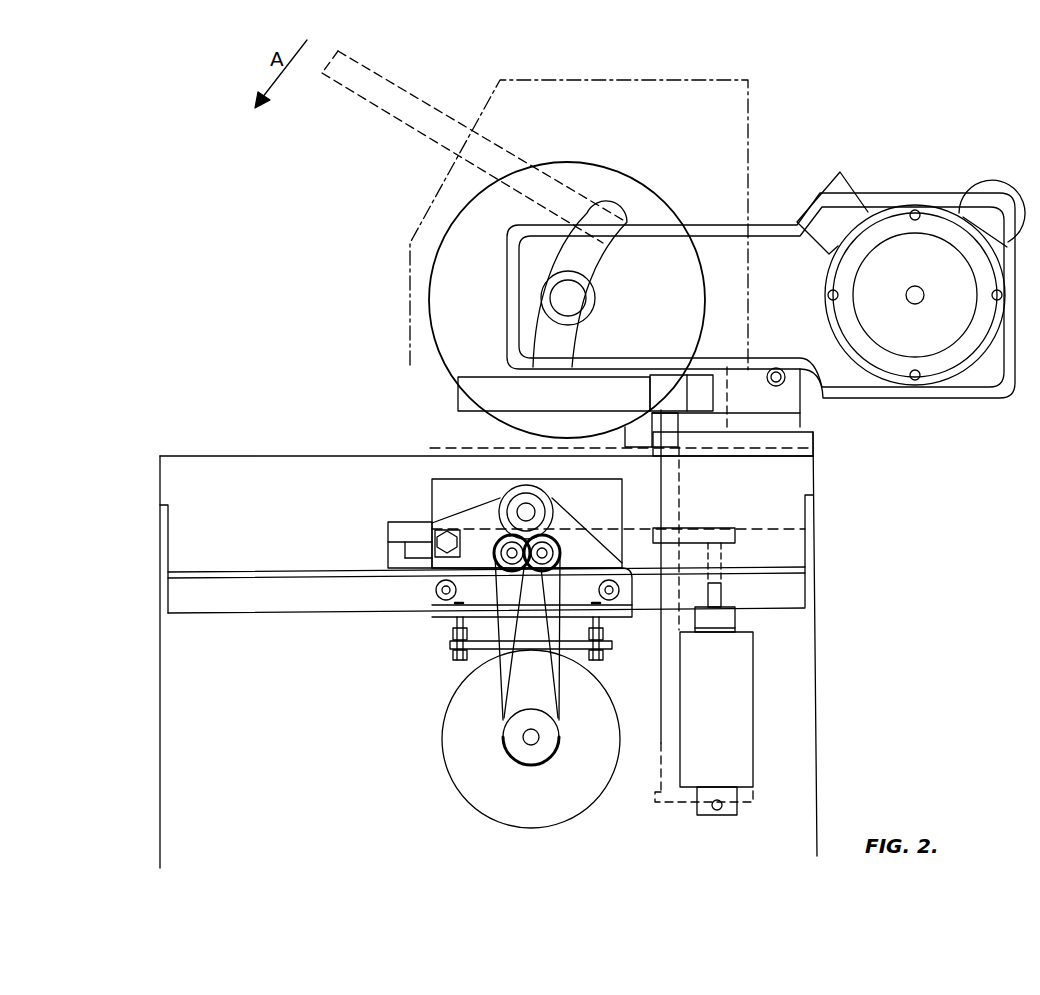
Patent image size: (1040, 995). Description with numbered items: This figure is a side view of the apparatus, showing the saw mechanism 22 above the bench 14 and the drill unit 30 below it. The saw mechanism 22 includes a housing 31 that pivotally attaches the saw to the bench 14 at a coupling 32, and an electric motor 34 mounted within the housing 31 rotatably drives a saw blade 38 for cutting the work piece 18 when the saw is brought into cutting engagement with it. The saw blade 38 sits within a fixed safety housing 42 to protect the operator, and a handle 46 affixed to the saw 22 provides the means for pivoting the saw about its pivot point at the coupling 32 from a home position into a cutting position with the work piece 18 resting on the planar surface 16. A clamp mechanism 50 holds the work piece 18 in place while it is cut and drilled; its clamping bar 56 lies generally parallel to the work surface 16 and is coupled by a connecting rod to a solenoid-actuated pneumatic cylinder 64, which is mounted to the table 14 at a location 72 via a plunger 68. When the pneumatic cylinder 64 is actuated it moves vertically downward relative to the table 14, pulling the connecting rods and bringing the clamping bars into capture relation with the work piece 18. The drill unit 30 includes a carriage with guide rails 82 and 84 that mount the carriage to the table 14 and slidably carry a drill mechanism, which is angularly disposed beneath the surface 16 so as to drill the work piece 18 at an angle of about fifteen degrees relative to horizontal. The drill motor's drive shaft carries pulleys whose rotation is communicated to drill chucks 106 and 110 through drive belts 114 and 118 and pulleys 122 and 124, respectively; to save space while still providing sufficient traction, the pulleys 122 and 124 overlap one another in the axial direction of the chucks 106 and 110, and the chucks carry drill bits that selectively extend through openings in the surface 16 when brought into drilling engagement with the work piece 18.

The bench 14 is at (222, 430).
The planar surface 16 is at (307, 456).
The work piece 18 is at (500, 433).
The saw mechanism 22 is at (812, 126).
The drill unit 30 is at (394, 679).
The housing 31 is at (762, 224).
The coupling 32 is at (785, 386).
The electric motor 34 is at (930, 193).
The saw blade 38 is at (641, 183).
The safety housing 42 is at (603, 80).
The handle 46 is at (360, 64).
The clamp mechanism 50 is at (420, 388).
The clamping bar 56 is at (458, 401).
The pneumatic cylinder 64 is at (753, 717).
The plunger 68 is at (723, 593).
The mounting location 72 is at (694, 528).
The guide rail 82 is at (434, 590).
The guide rail 84 is at (613, 598).
The drill chuck 106 is at (493, 558).
The drill chuck 110 is at (560, 515).
The drive belt 114 is at (496, 598).
The drive belt 118 is at (560, 592).
The pulley 122 is at (432, 507).
The pulley 124 is at (561, 555).